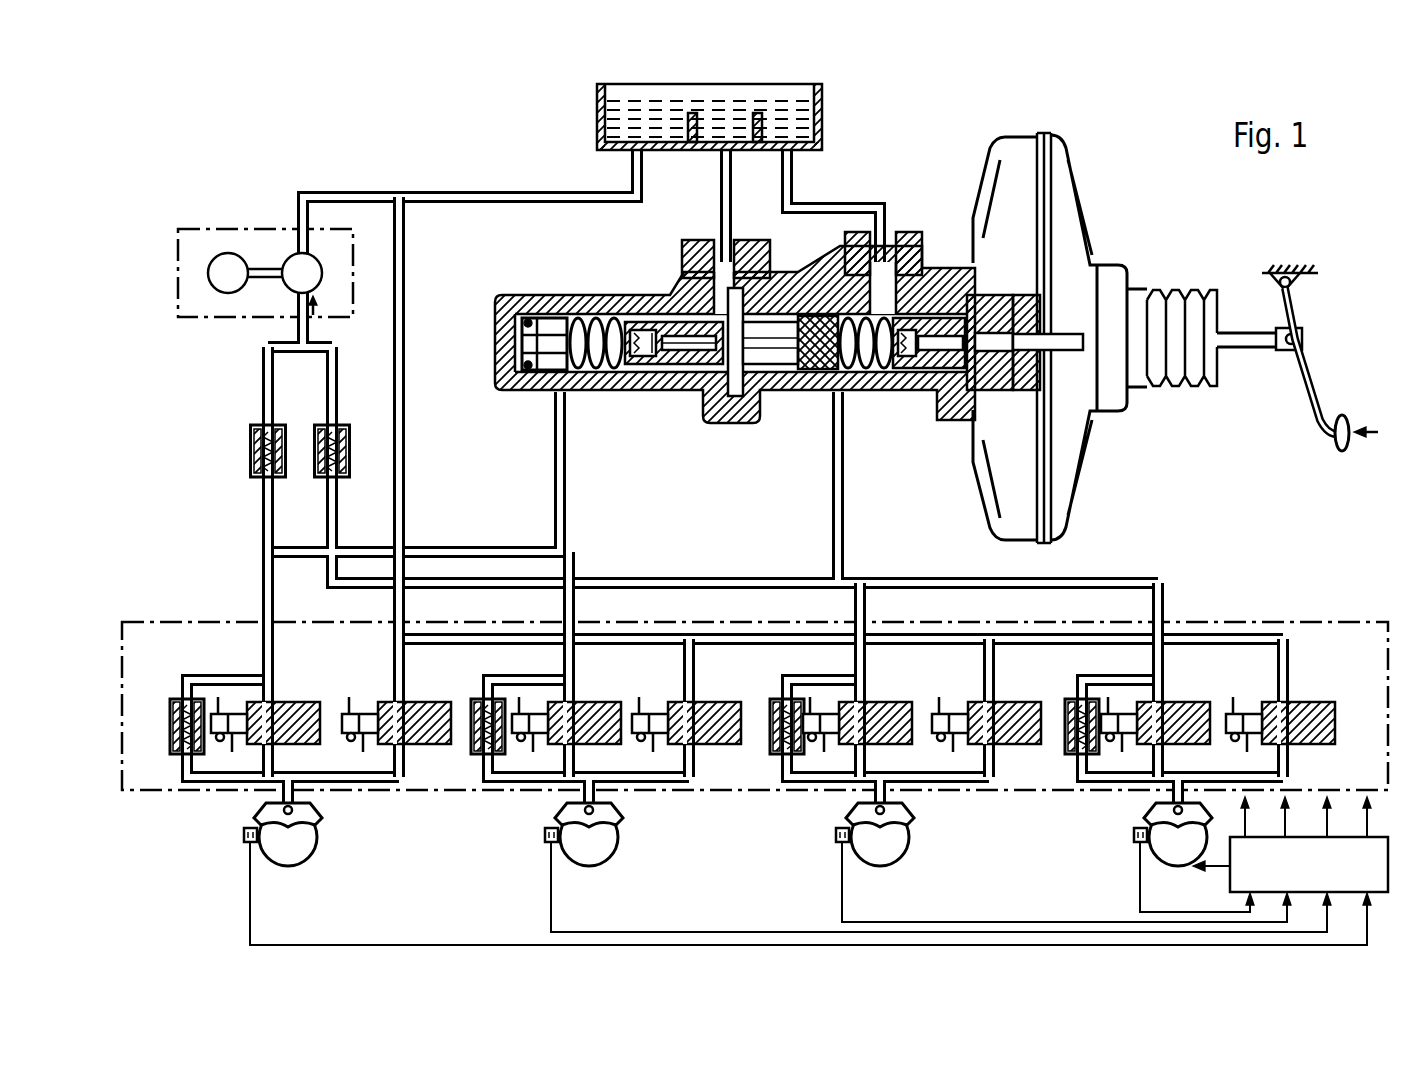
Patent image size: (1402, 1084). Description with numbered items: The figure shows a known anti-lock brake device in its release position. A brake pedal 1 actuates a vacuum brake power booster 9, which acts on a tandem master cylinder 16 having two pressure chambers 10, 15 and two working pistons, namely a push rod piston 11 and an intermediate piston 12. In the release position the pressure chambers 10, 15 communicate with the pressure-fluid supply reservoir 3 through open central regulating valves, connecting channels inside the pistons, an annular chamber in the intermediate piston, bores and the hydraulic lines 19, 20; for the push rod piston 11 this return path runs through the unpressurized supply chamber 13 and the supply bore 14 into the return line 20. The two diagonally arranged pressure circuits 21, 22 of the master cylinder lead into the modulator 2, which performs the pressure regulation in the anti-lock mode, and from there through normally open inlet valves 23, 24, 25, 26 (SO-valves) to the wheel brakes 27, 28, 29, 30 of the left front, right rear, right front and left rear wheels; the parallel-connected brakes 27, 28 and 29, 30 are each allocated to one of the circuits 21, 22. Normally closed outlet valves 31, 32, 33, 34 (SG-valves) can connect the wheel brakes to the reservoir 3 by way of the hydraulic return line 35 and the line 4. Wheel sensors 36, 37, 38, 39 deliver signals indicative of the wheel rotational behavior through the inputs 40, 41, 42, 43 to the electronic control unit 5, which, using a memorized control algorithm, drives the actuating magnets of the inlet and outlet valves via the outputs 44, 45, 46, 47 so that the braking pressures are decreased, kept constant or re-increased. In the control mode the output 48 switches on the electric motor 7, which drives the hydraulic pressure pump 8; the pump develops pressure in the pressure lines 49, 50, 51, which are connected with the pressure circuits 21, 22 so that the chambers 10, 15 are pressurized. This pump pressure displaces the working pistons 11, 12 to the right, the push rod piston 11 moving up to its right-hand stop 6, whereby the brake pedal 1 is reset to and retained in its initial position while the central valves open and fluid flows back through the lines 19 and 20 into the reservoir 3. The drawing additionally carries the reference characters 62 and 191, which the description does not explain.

The brake pedal 1 is at (1322, 432).
The modulator 2 is at (153, 620).
The pressure-fluid supply reservoir 3 is at (597, 118).
The line 4 is at (405, 513).
The electronic control unit 5 is at (1321, 886).
The right-hand stop 6 is at (974, 425).
The electric motor 7 is at (208, 274).
The hydraulic pressure pump 8 is at (322, 270).
The vacuum brake power booster 9 is at (1121, 338).
The pressure chamber 10 is at (875, 393).
The push rod piston 11 is at (942, 393).
The intermediate piston 12 is at (660, 393).
The supply chamber 13 is at (965, 275).
The supply bore 14 is at (932, 275).
The pressure chamber 15 is at (597, 393).
The tandem master cylinder 16 is at (790, 402).
The hydraulic line 19 is at (721, 177).
The hydraulic line 20 is at (790, 180).
The pressure circuit 21 is at (565, 511).
The pressure circuit 22 is at (844, 516).
The inlet valve 23 is at (283, 701).
The inlet valve 24 is at (586, 701).
The inlet valve 25 is at (880, 701).
The inlet valve 26 is at (1178, 701).
The wheel brake 27 is at (292, 866).
The wheel brake 28 is at (591, 866).
The wheel brake 29 is at (884, 866).
The wheel brake 30 is at (1180, 866).
The outlet valve 31 is at (419, 701).
The outlet valve 32 is at (710, 701).
The outlet valve 33 is at (1010, 701).
The outlet valve 34 is at (1301, 701).
The hydraulic return line 35 is at (776, 633).
The sensor 36 is at (248, 843).
The sensor 37 is at (549, 843).
The sensor 38 is at (840, 843).
The sensor 39 is at (1137, 843).
The input 40 is at (1213, 885).
The input 41 is at (1084, 886).
The input 42 is at (959, 887).
The input 43 is at (826, 893).
The output 44 is at (1250, 836).
The output 45 is at (1290, 836).
The output 46 is at (1332, 836).
The output 47 is at (1372, 836).
The output 48 is at (1229, 867).
The pressure line 49 is at (298, 334).
The pressure line 50 is at (262, 516).
The pressure line 51 is at (326, 516).
The booster push rod 62 is at (1078, 352).
The stop pin 191 is at (688, 393).